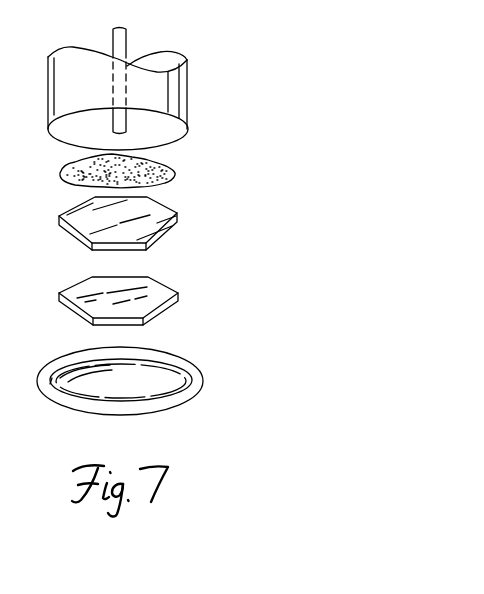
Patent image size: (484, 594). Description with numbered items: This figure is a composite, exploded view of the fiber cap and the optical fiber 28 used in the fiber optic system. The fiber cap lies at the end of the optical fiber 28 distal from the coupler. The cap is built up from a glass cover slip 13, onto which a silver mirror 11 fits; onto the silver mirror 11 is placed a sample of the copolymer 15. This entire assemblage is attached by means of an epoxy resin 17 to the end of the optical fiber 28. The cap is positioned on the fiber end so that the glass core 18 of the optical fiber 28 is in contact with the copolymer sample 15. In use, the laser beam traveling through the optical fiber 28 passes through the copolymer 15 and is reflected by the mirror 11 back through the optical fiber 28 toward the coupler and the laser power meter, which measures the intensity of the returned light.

The glass core 18 is at (127, 50).
The optical fiber 28 is at (187, 90).
The copolymer sample 15 is at (175, 173).
The silver mirror 11 is at (177, 222).
The glass cover slip 13 is at (178, 297).
The epoxy resin 17 is at (200, 368).